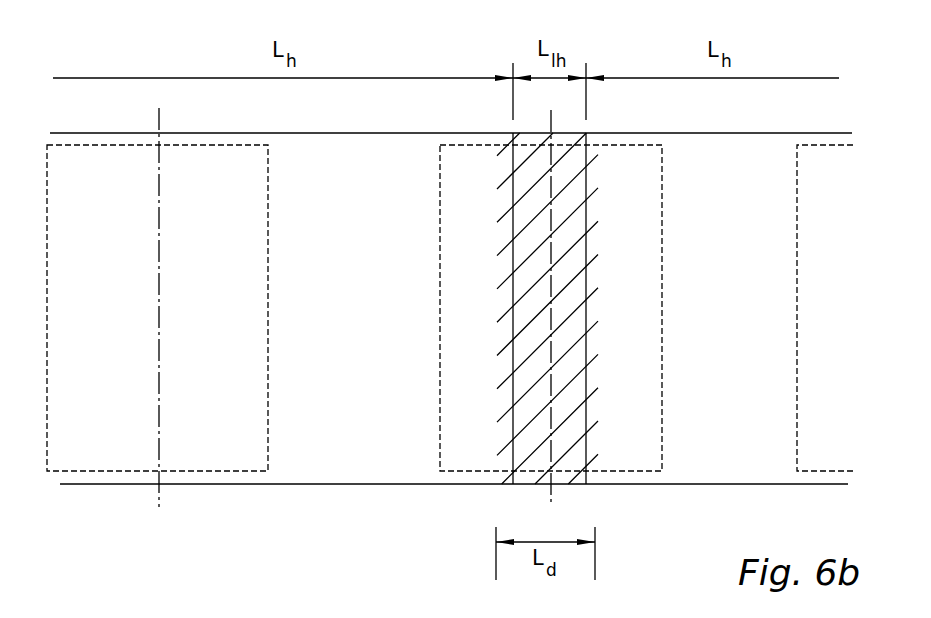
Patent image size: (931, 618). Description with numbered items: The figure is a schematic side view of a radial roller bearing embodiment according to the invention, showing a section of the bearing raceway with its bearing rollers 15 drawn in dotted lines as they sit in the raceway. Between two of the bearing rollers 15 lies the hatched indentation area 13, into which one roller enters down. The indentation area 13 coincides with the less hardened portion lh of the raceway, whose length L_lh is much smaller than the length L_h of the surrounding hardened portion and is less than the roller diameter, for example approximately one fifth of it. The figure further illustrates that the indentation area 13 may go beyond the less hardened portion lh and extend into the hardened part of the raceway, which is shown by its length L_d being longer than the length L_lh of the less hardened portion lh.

The indentation area 13 is at (593, 261).
The bearing rollers 15 is at (460, 324).
The less hardened portion lh is at (572, 364).